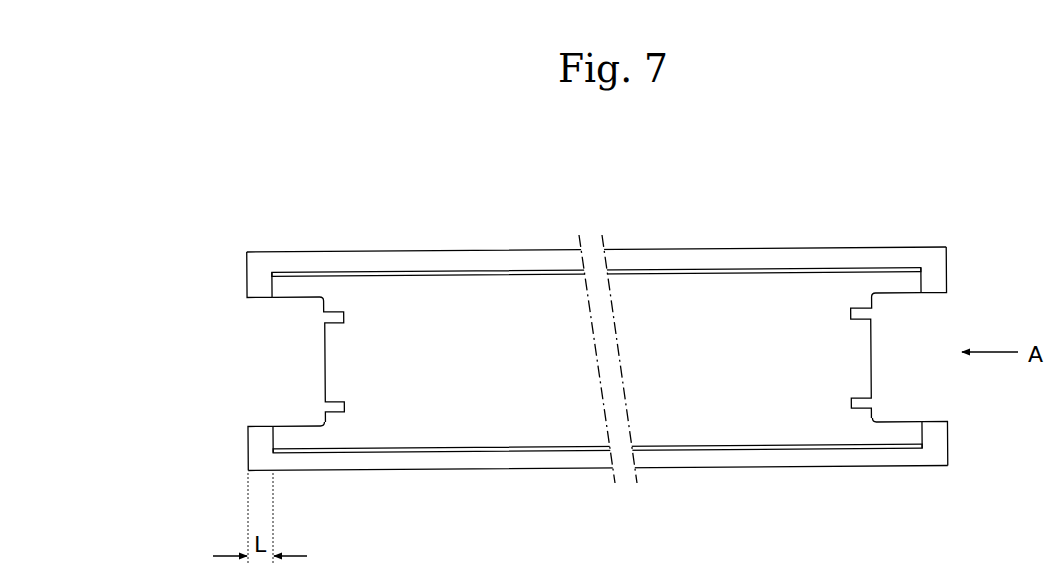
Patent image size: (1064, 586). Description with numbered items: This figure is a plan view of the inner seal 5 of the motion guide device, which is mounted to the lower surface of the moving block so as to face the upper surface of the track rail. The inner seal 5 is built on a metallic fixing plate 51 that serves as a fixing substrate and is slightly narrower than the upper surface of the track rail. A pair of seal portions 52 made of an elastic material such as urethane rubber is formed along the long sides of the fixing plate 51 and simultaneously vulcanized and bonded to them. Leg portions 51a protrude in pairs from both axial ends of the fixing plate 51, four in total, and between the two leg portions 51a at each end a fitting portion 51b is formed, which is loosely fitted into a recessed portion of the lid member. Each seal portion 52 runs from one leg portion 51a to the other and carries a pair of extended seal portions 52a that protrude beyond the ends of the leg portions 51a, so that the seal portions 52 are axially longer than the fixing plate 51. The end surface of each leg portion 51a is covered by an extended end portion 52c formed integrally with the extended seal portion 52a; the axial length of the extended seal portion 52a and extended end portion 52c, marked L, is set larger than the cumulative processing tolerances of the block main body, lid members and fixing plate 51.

The inner seal 5 is at (803, 228).
The fixing plate 51 is at (724, 286).
The leg portion 51a is at (330, 278).
The fitting portion 51b is at (352, 353).
The seal portion 52 is at (502, 262).
The extended seal portion 52a is at (258, 262).
The extended end portion 52c is at (258, 285).